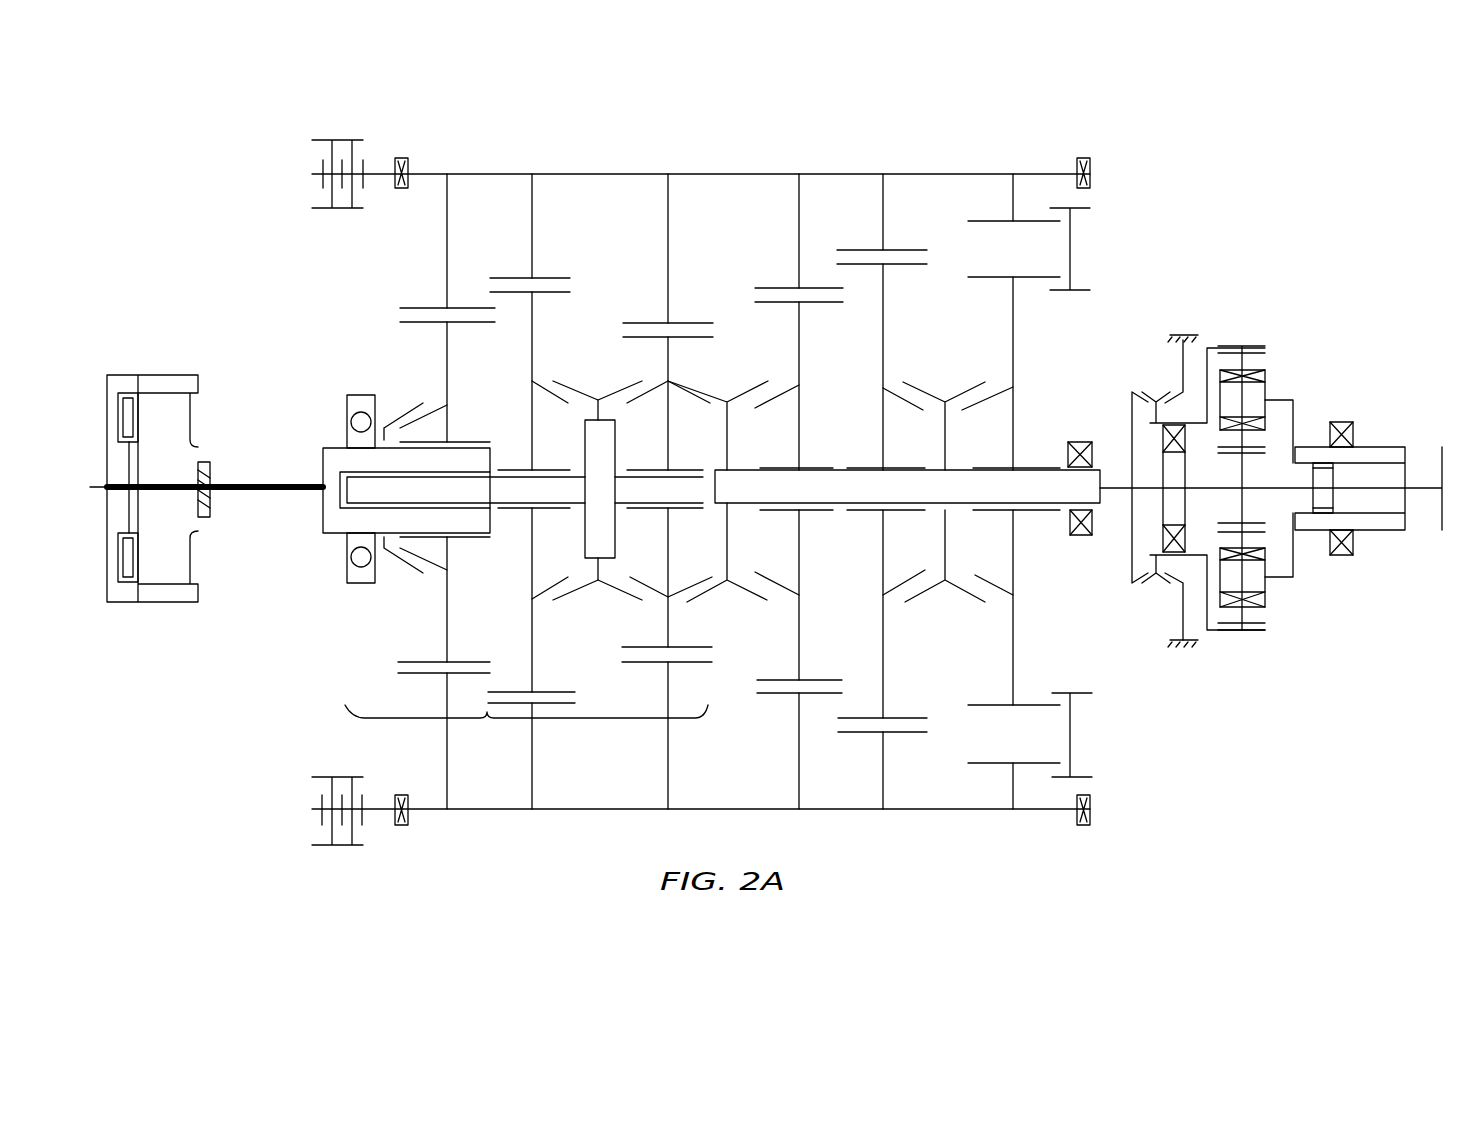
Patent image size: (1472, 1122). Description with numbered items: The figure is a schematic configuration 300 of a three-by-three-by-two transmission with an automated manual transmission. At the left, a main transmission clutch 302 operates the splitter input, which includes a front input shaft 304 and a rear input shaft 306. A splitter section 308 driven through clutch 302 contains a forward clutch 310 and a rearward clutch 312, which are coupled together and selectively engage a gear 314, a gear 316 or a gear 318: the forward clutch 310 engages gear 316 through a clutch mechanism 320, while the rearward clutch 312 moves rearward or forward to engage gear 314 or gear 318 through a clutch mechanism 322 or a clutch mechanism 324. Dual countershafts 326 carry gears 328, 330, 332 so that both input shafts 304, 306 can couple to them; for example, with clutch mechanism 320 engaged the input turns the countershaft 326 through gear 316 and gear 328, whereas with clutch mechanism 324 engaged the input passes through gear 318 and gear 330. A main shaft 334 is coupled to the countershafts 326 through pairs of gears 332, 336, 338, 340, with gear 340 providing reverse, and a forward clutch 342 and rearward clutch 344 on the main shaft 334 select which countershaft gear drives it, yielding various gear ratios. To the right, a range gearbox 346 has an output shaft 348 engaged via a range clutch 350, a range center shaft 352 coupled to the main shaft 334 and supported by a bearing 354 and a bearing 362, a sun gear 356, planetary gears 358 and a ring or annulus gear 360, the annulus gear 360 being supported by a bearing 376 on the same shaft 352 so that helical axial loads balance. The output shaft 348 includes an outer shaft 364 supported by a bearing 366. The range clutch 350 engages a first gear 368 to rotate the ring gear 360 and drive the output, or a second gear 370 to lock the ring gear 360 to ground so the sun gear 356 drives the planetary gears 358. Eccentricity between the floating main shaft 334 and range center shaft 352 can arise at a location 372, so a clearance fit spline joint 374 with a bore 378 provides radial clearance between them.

The schematic configuration 300 is at (886, 95).
The main transmission clutch 302 is at (210, 360).
The front input shaft 304 is at (305, 480).
The rear input shaft 306 is at (585, 468).
The splitter section 308 is at (526, 735).
The forward clutch 310 is at (398, 560).
The rearward clutch 312 is at (577, 390).
The gear 314 is at (665, 758).
The gear 316 is at (447, 765).
The gear 318 is at (533, 762).
The clutch mechanism 320 is at (403, 378).
The clutch mechanism 322 is at (630, 378).
The clutch mechanism 324 is at (545, 360).
The countershafts 326 is at (700, 174).
The gear 328 is at (447, 268).
The gear 330 is at (532, 233).
The gear 332 is at (668, 272).
The main shaft 334 is at (840, 505).
The gear 336 is at (815, 315).
The gear 338 is at (925, 280).
The gear 340 is at (1035, 295).
The forward clutch 342 is at (740, 608).
The rearward clutch 344 is at (950, 605).
The range gearbox 346 is at (1280, 300).
The output shaft 348 is at (1420, 487).
The range clutch 350 is at (1158, 378).
The range center shaft 352 is at (1148, 493).
The bearing 354 is at (1082, 440).
The sun gear 356 is at (322, 130).
The planetary gears 358 is at (333, 520).
The ring or annulus gear 360 is at (532, 345).
The bearing 362 is at (668, 372).
The outer shaft 364 is at (347, 410).
The bearing 366 is at (1340, 420).
The first gear 368 is at (1140, 580).
The second gear 370 is at (1183, 577).
The location 372 is at (1183, 333).
The clearance fit spline joint 374 is at (1068, 470).
The bearing 376 is at (1187, 540).
The bore 378 is at (1110, 450).